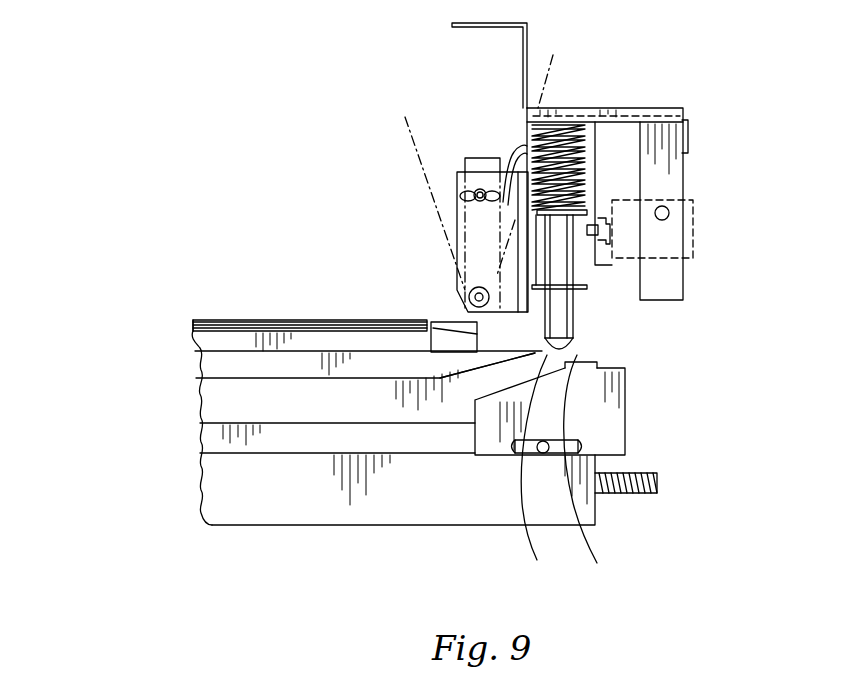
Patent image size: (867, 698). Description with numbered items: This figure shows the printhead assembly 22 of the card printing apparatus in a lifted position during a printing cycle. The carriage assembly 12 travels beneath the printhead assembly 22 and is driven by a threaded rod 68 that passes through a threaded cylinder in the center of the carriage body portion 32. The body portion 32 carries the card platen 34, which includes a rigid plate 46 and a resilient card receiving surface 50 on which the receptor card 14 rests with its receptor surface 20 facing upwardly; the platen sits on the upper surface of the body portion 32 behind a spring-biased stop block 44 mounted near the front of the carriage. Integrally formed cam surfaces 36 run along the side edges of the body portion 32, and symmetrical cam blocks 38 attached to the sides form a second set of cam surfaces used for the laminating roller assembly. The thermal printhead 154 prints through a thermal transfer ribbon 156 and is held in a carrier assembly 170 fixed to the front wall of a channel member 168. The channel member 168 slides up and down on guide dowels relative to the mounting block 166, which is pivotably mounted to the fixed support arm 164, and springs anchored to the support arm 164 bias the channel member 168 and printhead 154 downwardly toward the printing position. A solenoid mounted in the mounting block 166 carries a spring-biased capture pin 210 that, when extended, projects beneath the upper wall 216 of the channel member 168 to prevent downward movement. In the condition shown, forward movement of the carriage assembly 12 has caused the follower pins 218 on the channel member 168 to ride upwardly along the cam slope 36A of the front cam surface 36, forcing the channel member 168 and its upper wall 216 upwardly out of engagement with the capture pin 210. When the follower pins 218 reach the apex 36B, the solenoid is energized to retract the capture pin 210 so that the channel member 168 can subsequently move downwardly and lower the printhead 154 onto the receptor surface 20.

The carriage assembly 12 is at (203, 480).
The receptor card 14 is at (298, 320).
The receptor surface 20 is at (247, 320).
The printhead assembly 22 is at (678, 108).
The body portion 32 is at (363, 523).
The card platen 34 is at (193, 343).
The cam surfaces 36 is at (380, 378).
The cam slope 36A is at (598, 475).
The apex 36B is at (540, 472).
The cam blocks 38 is at (590, 413).
The stop block 44 is at (452, 320).
The rigid plate 46 is at (250, 340).
The card receiving surface 50 is at (193, 325).
The threaded rod 68 is at (657, 493).
The thermal printhead 154 is at (480, 157).
The thermal transfer ribbon 156 is at (543, 95).
The support arm 164 is at (662, 183).
The mounting block 166 is at (613, 180).
The channel member 168 is at (588, 287).
The carrier assembly 170 is at (530, 58).
The capture pin 210 is at (567, 322).
The upper wall 216 is at (588, 187).
The follower pins 218 is at (575, 345).